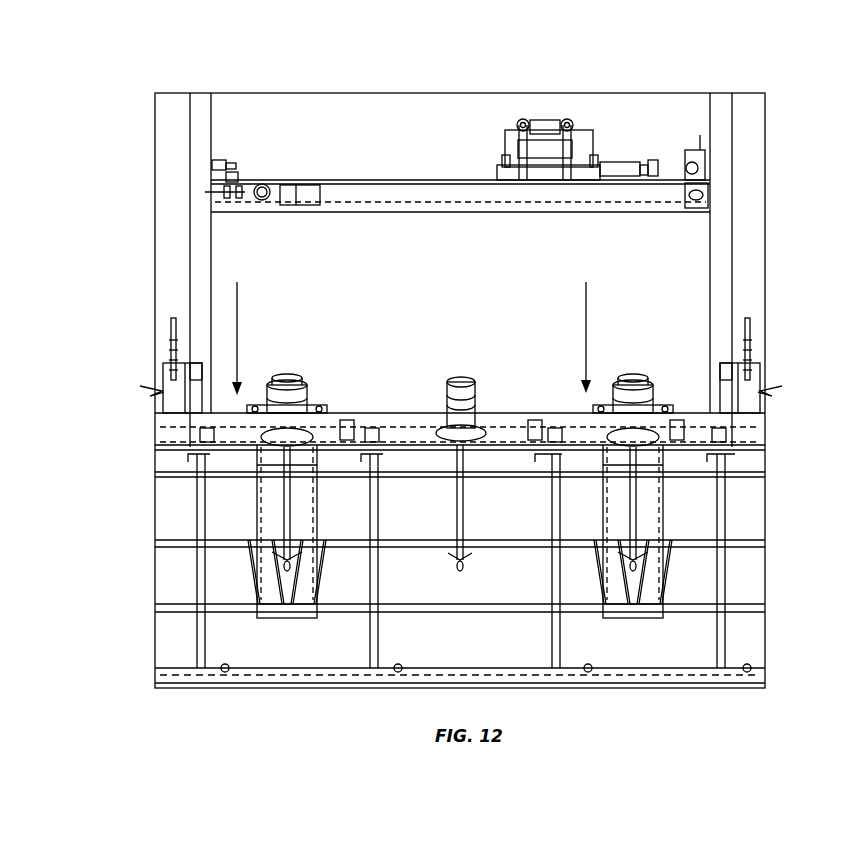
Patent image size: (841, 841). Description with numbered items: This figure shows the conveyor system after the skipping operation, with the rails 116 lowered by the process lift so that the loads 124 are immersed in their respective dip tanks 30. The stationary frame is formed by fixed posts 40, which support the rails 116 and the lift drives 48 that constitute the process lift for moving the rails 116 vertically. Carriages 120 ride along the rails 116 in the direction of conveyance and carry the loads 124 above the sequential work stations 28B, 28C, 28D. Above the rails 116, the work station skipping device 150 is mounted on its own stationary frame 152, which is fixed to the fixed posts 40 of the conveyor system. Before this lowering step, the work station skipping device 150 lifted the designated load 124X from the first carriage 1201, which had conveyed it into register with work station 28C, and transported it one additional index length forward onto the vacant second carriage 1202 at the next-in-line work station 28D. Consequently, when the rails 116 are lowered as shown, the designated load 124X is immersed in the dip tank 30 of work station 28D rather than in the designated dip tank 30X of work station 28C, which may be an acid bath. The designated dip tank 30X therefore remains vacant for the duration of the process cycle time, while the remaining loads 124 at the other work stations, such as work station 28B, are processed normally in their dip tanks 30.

The fixed posts 40 is at (197, 241).
The lift drives 48 is at (157, 403).
The rails 116 is at (383, 430).
The carriages 120 is at (677, 433).
The first carriage 1201 is at (535, 435).
The second carriage 1202 is at (350, 430).
The load 124 is at (668, 523).
The designated load 124X is at (245, 490).
The work station skipping device 150 is at (628, 112).
The stationary frame 152 is at (480, 214).
The dip tanks 30 is at (460, 515).
The designated dip tank 30X is at (466, 517).
The work station 28B is at (681, 652).
The work station 28C is at (389, 652).
The work station 28D is at (220, 652).